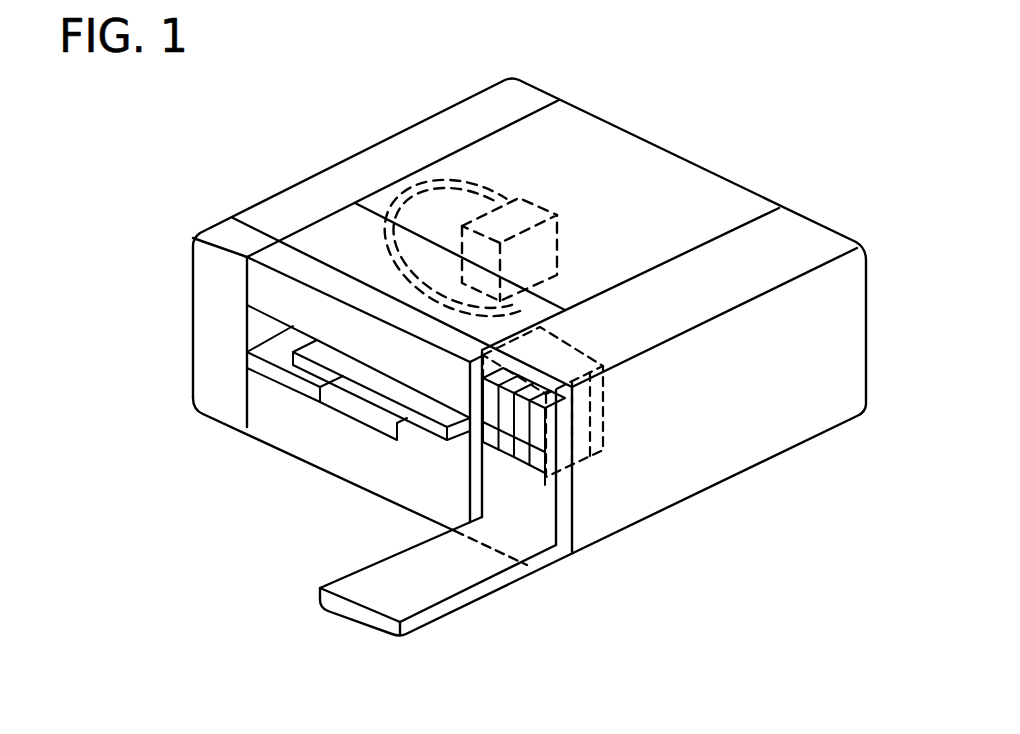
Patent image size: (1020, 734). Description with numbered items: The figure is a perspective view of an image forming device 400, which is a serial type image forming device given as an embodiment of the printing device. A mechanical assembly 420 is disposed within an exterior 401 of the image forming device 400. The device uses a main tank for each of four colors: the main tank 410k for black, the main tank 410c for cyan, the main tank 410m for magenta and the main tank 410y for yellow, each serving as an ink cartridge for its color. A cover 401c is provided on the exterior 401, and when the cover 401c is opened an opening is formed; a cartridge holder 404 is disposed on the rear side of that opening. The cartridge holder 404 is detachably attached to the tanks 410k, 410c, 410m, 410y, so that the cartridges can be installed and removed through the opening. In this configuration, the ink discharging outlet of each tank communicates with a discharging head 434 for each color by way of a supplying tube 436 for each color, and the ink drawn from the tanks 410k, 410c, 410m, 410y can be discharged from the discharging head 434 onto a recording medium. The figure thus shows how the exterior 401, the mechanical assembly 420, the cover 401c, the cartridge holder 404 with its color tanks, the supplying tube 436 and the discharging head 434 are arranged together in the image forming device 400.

The image forming device 400 is at (778, 106).
The exterior 401 is at (321, 174).
The cover 401c is at (470, 596).
The cartridge holder 404 is at (605, 419).
The main tank for black 410k is at (491, 426).
The main tank for cyan 410c is at (506, 433).
The main tank for magenta 410m is at (521, 440).
The main tank for yellow 410y is at (536, 448).
The mechanical assembly 420 is at (619, 209).
The discharging head 434 is at (529, 203).
The supplying tube 436 is at (427, 180).